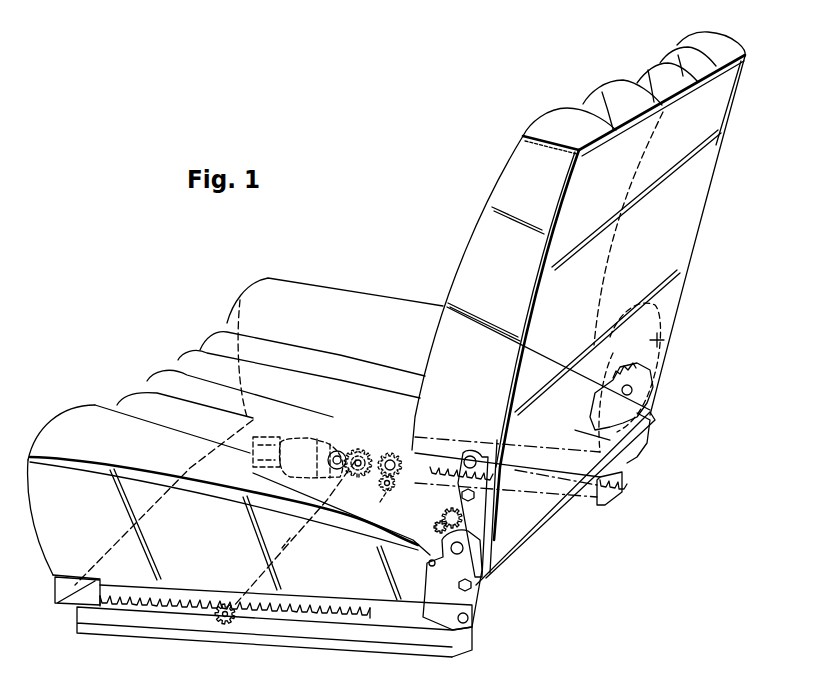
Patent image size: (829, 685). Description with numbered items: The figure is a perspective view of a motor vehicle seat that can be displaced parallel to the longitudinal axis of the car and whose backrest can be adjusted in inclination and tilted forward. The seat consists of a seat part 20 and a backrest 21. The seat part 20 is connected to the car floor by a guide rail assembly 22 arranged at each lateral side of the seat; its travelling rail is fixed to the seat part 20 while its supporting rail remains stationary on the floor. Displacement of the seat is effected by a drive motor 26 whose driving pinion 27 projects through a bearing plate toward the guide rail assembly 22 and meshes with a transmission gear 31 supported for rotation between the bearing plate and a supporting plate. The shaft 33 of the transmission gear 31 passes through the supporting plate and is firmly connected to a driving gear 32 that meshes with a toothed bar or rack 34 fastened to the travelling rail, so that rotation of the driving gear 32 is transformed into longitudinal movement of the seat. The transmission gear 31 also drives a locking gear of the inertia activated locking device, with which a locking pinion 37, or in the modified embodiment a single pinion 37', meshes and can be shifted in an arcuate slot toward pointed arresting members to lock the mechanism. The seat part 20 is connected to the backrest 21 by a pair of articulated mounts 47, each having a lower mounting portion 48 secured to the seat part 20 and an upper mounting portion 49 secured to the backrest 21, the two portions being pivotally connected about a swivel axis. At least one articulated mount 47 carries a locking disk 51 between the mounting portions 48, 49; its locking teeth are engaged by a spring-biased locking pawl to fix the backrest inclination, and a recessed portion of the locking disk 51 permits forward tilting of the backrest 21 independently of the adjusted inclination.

The seat part 20 is at (95, 420).
The backrest 21 is at (575, 127).
The guide rail assembly 22 is at (548, 497).
The drive motor 26 is at (250, 497).
The driving pinion 27 is at (333, 440).
The transmission gear 31 is at (357, 450).
The driving gear 32 is at (381, 452).
The shaft 33 is at (290, 538).
The toothed bar or rack 34 is at (486, 472).
The locking pinion 37 is at (457, 476).
The pinion 37' is at (364, 525).
The articulated mount 47 is at (657, 390).
The lower mounting portion 48 is at (640, 433).
The upper mounting portion 49 is at (668, 340).
The locking disk 51 is at (427, 517).